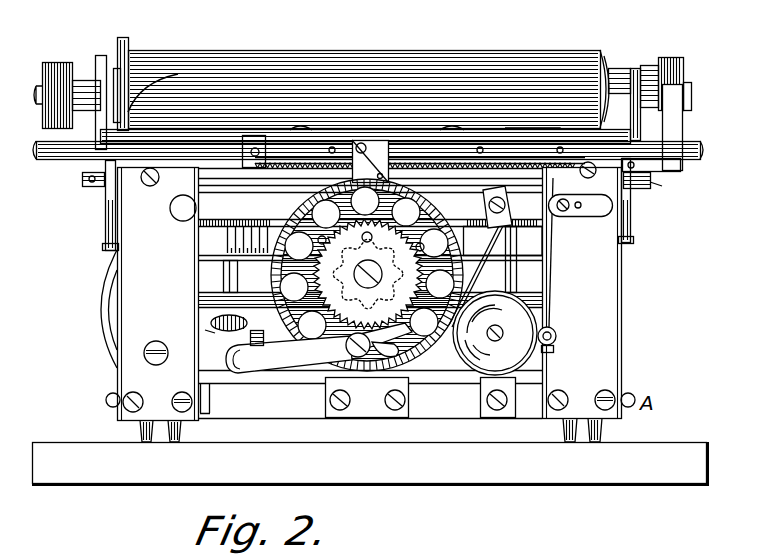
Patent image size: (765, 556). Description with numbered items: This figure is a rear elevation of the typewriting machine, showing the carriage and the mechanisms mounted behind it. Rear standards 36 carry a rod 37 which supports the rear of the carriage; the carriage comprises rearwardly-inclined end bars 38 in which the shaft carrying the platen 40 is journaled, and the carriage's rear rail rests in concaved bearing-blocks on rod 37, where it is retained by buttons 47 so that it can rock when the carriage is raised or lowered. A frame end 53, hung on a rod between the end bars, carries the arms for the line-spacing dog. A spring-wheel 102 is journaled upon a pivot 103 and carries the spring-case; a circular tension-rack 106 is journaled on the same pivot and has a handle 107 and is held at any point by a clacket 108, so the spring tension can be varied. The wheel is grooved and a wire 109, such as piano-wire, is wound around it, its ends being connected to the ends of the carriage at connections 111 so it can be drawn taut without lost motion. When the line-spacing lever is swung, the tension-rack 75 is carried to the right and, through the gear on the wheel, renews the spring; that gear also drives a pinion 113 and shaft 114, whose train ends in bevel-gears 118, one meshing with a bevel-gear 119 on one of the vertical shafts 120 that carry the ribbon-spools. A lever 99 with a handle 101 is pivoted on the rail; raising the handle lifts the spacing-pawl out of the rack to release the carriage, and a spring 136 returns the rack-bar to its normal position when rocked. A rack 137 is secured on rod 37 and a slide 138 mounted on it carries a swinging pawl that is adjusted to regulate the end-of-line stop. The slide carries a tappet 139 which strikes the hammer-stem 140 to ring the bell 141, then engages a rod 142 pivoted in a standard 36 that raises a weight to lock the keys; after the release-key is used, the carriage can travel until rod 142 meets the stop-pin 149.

The rear standard 36 is at (370, 291).
The rod 37 is at (81, 114).
The end bar 38 is at (368, 205).
The platen 40 is at (380, 79).
The button 47 is at (368, 137).
The frame end 53 is at (143, 76).
The tension-rack 75 is at (505, 240).
The lever 99 is at (682, 168).
The handle 101 is at (670, 126).
The spring-wheel 102 is at (384, 275).
The pivot 103 is at (368, 274).
The circular tension-rack 106 is at (370, 274).
The handle 107 is at (372, 238).
The clacket 108 is at (289, 354).
The wire 109 is at (78, 184).
The wire connection 111 is at (368, 194).
The pinion 113 is at (379, 340).
The shaft 114 is at (421, 398).
The bevel-gear 118 is at (241, 330).
The bevel-gear 119 is at (218, 342).
The vertical shaft 120 is at (383, 260).
The spring 136 is at (370, 294).
The rack 137 is at (446, 152).
The slide 138 is at (414, 152).
The tappet 139 is at (370, 161).
The hammer-stem 140 is at (492, 201).
The bell 141 is at (495, 333).
The rod 142 is at (560, 265).
The stop-pin 149 is at (581, 221).